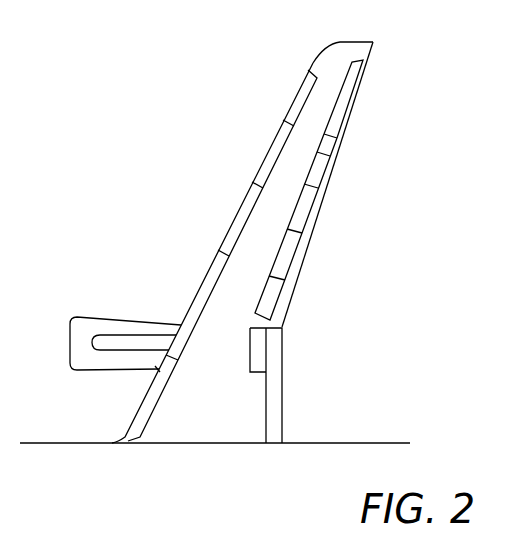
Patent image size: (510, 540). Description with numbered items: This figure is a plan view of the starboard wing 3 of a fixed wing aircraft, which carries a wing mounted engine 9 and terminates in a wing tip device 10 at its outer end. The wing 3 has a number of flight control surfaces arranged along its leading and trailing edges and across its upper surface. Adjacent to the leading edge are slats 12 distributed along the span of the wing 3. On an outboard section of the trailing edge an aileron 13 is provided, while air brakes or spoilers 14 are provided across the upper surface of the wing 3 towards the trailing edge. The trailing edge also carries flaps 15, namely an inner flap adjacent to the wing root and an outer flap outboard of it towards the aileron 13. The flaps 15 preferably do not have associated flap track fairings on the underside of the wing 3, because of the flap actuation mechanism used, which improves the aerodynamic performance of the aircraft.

The starboard wing 3 is at (153, 180).
The wing mounted engine 9 is at (82, 332).
The wing tip device 10 is at (366, 43).
The slat 12 is at (307, 92).
The aileron 13 is at (343, 101).
The air brake/spoiler 14 is at (320, 167).
The flap 15 is at (283, 307).